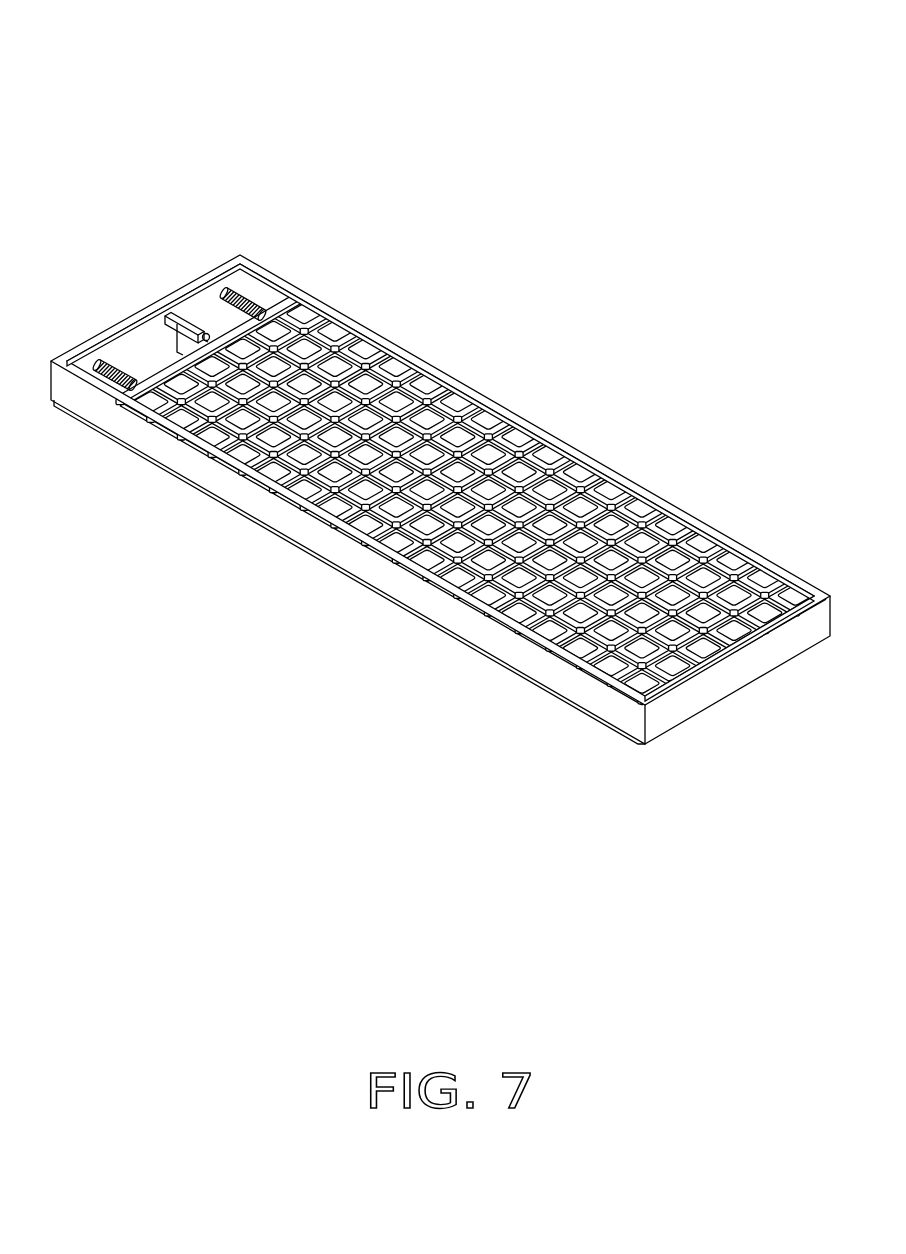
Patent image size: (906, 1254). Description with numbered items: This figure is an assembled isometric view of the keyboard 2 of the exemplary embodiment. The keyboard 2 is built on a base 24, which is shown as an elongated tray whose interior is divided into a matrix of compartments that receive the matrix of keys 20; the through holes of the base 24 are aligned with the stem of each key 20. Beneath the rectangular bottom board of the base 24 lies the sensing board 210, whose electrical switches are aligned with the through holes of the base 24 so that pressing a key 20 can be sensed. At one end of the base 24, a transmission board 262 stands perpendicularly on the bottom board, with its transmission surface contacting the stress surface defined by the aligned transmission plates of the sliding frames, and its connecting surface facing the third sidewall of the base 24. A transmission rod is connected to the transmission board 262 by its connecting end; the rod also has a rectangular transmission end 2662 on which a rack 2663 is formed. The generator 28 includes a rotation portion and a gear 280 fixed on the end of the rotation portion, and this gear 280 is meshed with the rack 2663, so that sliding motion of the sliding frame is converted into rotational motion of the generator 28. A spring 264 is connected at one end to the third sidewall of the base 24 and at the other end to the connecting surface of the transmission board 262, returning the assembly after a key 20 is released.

The keyboard 2 is at (186, 80).
The key 20 is at (426, 475).
The base 24 is at (455, 377).
The sensing board 210 is at (83, 423).
The transmission board 262 is at (288, 290).
The spring 264 is at (244, 294).
The generator 28 is at (176, 346).
The transmission end 2662 is at (142, 283).
The rack 2663 is at (185, 313).
The gear 280 is at (203, 331).